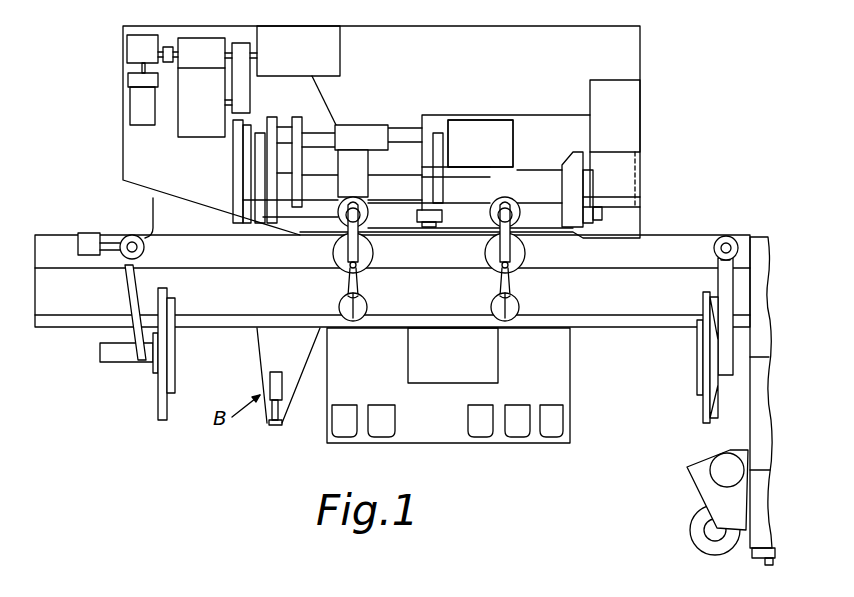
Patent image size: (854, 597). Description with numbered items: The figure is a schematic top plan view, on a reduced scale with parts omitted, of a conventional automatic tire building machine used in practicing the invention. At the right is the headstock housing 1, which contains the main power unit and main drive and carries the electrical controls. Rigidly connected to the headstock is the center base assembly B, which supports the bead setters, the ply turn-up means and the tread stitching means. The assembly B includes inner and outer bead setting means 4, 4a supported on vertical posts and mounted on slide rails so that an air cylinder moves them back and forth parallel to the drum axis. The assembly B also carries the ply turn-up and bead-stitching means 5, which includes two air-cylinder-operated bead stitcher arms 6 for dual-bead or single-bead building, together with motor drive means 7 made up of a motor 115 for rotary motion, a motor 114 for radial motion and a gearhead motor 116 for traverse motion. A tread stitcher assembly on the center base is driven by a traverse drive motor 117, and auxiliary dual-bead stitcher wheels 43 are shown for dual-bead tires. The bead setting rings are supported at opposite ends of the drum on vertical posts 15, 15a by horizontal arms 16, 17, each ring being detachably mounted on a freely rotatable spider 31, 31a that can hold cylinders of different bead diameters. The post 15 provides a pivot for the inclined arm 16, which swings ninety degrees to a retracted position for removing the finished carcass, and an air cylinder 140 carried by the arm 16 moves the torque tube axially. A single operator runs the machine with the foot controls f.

The housing 1 is at (750, 426).
The inner bead setting means 4 is at (160, 420).
The outer bead setting means 4a is at (703, 418).
The ply turn-up and bead-stitching means 5 is at (364, 204).
The bead stitcher arms 6 is at (335, 253).
The motor drive means 7 is at (483, 130).
The vertical post 15 is at (145, 248).
The vertical post 15a is at (714, 248).
The horizontal arm 16 is at (125, 288).
The horizontal arm 17 is at (735, 293).
The spider 31 is at (158, 396).
The spider 31a is at (703, 297).
The dual-bead stitcher wheels 43 is at (340, 309).
The motor 114 is at (290, 38).
The motor 115 is at (457, 120).
The gearhead motor 116 is at (612, 80).
The traverse drive motor 117 is at (700, 487).
The air cylinder 140 is at (118, 358).
The center base assembly B is at (652, 60).
The foot controls f is at (338, 440).